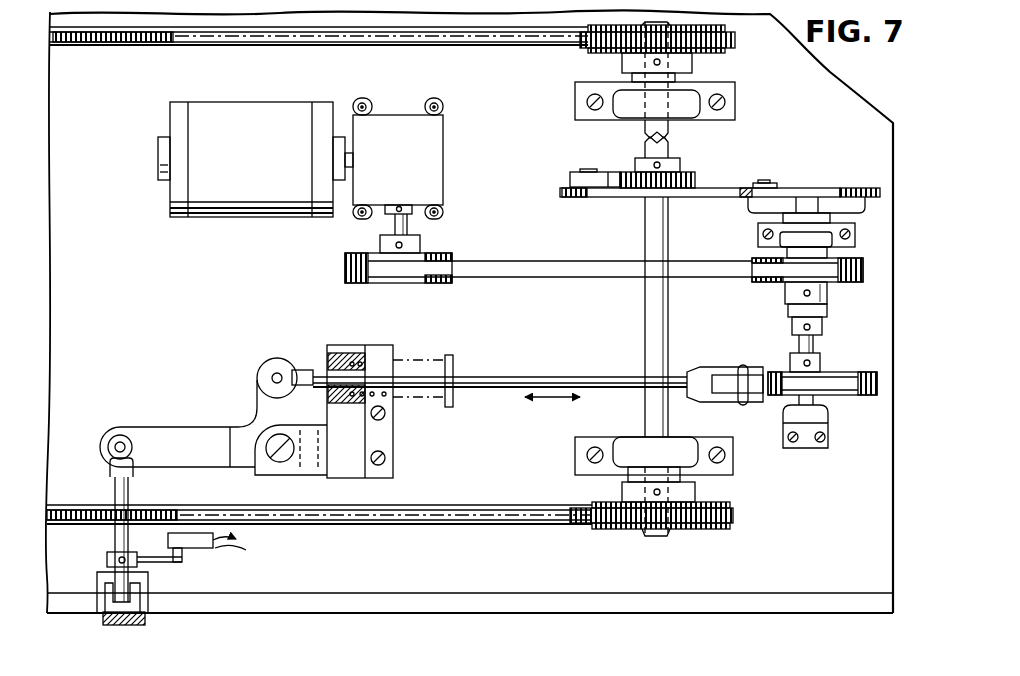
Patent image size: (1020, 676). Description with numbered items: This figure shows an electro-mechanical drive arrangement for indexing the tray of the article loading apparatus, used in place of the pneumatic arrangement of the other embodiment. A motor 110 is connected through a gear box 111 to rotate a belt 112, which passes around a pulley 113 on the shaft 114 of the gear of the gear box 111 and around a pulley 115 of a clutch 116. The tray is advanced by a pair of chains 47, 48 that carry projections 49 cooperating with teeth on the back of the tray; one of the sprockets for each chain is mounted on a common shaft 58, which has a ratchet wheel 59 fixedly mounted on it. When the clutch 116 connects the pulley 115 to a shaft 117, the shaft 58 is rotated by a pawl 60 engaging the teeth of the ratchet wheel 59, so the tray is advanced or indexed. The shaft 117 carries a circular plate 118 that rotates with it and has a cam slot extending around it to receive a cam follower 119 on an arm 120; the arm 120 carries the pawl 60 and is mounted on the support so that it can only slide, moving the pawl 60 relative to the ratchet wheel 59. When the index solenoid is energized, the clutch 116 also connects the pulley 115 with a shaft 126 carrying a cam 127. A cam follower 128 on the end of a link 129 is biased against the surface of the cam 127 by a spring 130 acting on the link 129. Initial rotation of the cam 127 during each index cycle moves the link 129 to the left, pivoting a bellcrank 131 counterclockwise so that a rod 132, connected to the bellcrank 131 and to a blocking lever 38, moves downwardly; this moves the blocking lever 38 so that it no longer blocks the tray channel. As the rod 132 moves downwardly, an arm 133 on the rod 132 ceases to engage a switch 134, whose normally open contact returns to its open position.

The blocking lever 38 is at (152, 621).
The chain 47 is at (516, 50).
The chain 48 is at (462, 528).
The projections 49 is at (126, 40).
The common shaft 58 is at (690, 330).
The ratchet wheel 59 is at (695, 180).
The pawl 60 is at (614, 176).
The motor 110 is at (245, 106).
The gear box 111 is at (398, 116).
The belt 112 is at (528, 262).
The pulley 113 is at (366, 275).
The shaft 114 is at (392, 222).
The pulley 115 is at (848, 282).
The clutch 116 is at (778, 296).
The shaft 117 is at (812, 200).
The circular plate 118 is at (858, 192).
The cam follower 119 is at (766, 186).
The arm 120 is at (628, 198).
The shaft 126 is at (798, 346).
The cam 127 is at (845, 374).
The cam follower 128 is at (735, 377).
The link 129 is at (510, 375).
The spring 130 is at (390, 396).
The bellcrank 131 is at (202, 418).
The rod 132 is at (117, 498).
The arm 133 is at (160, 563).
The switch 134 is at (195, 548).